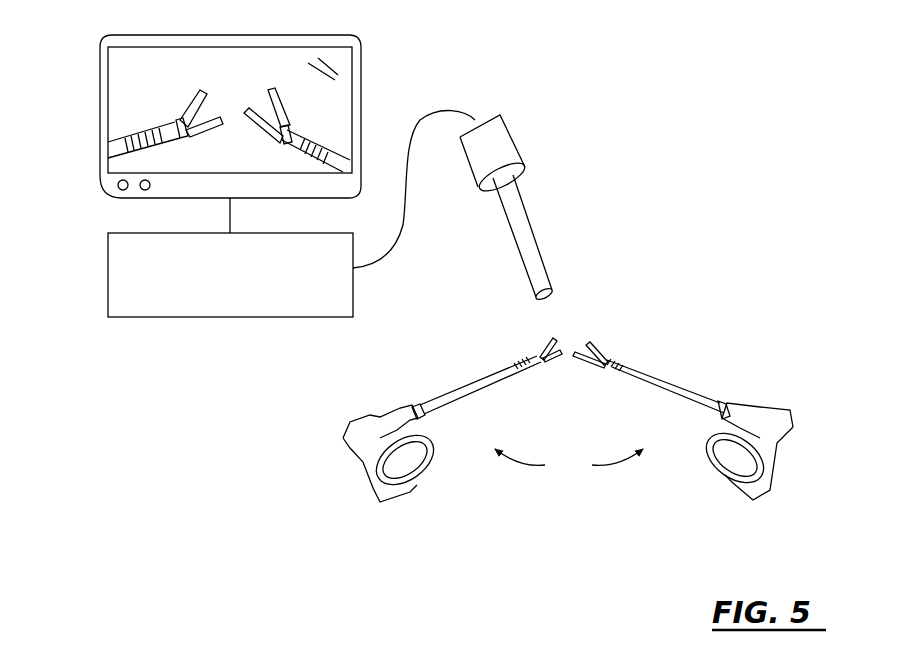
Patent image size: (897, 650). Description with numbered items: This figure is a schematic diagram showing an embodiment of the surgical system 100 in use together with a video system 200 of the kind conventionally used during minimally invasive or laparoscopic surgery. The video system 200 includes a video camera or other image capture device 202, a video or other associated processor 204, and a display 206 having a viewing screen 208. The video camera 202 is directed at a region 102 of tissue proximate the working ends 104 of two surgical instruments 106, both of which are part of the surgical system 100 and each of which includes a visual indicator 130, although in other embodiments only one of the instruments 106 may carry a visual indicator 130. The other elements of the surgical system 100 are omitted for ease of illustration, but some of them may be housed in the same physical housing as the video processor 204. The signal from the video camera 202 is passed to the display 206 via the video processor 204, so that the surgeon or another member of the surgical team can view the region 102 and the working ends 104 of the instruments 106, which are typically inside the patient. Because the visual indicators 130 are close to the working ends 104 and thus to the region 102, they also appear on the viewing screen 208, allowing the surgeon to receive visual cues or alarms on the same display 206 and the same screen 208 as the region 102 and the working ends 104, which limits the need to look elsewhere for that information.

The surgical system 100 is at (569, 463).
The region 102 is at (580, 310).
The working end 104 is at (200, 88).
The surgical instrument 106 is at (363, 435).
The visual indicator 130 is at (133, 138).
The video system 200 is at (508, 64).
The video camera 202 is at (500, 153).
The video processor 204 is at (122, 280).
The display 206 is at (108, 178).
The viewing screen 208 is at (123, 72).